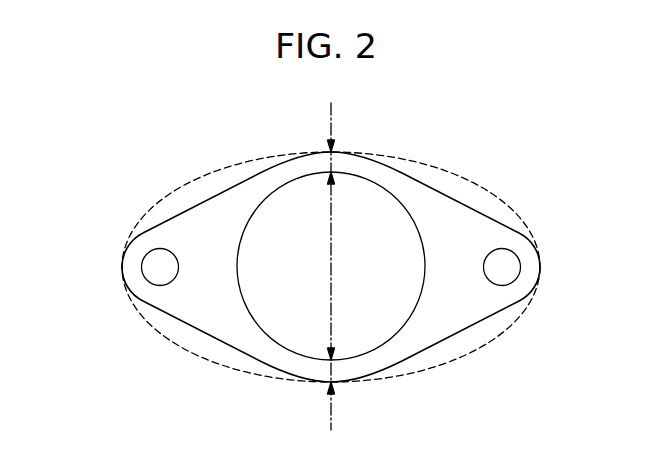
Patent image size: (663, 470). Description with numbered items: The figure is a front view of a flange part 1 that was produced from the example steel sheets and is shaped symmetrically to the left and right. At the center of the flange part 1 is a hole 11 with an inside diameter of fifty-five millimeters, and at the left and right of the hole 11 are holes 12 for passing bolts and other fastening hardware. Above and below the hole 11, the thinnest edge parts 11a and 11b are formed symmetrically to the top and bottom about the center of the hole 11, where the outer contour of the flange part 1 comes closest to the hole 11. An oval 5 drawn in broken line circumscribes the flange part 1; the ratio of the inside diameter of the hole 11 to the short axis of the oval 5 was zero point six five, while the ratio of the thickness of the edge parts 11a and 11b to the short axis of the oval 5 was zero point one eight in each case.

The flange part 1 is at (210, 227).
The oval circumscribing the flange part 5 is at (498, 333).
The hole 11 is at (375, 302).
The thinnest edge part 11a is at (340, 160).
The thinnest edge part 11b is at (326, 370).
The holes for passing bolts and other fastening hardware 12 is at (157, 263).